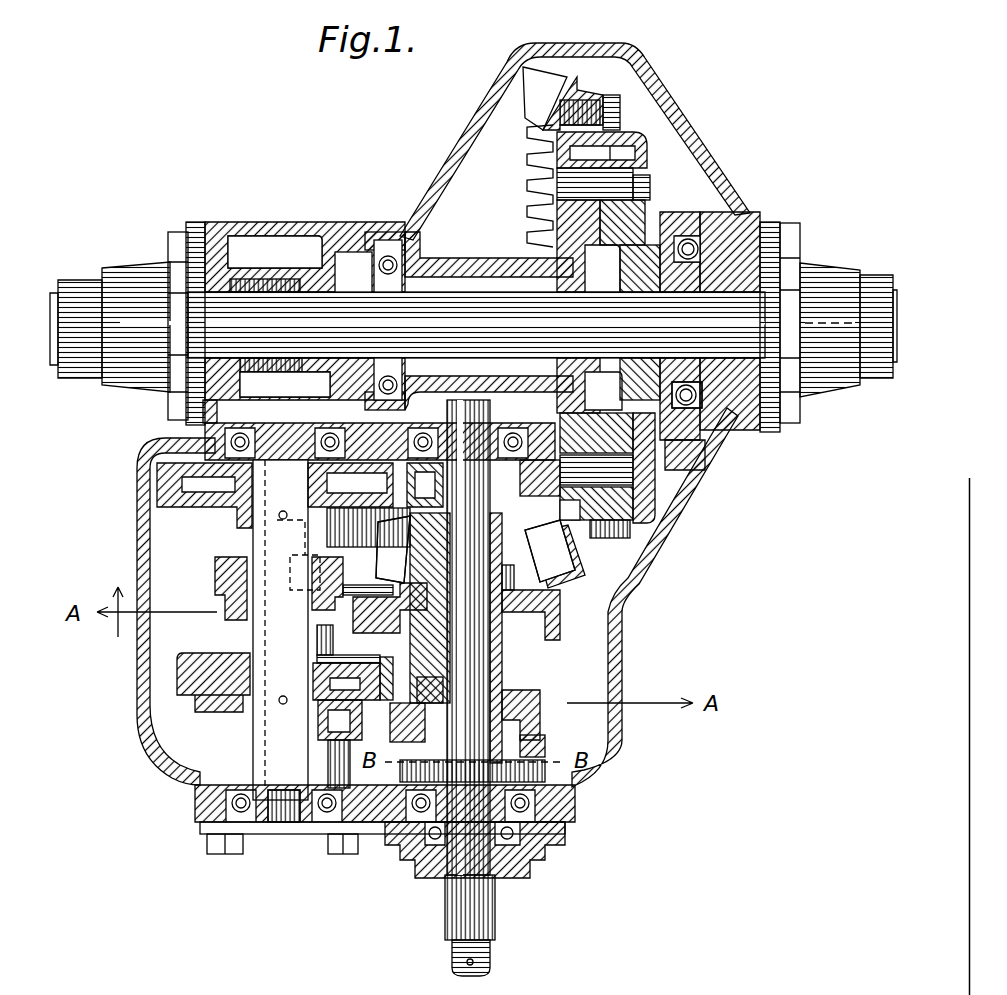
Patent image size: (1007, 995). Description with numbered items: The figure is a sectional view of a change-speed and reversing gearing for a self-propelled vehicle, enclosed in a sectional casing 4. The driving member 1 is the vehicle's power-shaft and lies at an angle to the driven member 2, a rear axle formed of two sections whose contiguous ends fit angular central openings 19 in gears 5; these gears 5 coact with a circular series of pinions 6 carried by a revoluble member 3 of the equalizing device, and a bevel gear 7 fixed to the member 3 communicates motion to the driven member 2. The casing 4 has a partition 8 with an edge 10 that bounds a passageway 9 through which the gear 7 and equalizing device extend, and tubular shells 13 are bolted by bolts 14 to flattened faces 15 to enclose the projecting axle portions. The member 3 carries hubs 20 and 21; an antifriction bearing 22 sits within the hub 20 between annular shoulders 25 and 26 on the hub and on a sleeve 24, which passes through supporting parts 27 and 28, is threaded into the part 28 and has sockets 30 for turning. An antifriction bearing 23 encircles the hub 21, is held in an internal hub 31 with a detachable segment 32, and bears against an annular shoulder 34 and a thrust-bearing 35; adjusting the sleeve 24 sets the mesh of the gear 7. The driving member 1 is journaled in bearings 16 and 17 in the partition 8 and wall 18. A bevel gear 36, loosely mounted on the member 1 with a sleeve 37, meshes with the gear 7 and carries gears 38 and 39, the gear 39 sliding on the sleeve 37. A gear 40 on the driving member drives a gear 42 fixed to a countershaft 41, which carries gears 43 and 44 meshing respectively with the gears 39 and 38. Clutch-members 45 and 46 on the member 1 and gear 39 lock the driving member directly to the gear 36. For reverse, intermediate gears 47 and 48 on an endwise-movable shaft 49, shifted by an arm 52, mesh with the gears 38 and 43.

The driving member 1 is at (460, 655).
The driven member 2 is at (430, 300).
The revoluble member 3 is at (626, 148).
The casing 4 is at (656, 106).
The gears 5 is at (570, 233).
The pinions 6 is at (572, 155).
The bevel gear 7 is at (572, 82).
The partition 8 is at (345, 440).
The passageway 9 is at (657, 470).
The edge of the partition 10 is at (542, 464).
The tubular shells 13 is at (132, 277).
The bolts 14 is at (175, 398).
The flattened faces 15 is at (194, 224).
The bearing 16 is at (500, 440).
The bearing 17 is at (394, 840).
The wall 18 is at (570, 803).
The central openings 19 is at (615, 298).
The hub 20 is at (466, 274).
The hub 21 is at (652, 296).
The antifriction bearing 22 is at (375, 243).
The antifriction bearing 23 is at (730, 216).
The sleeve 24 is at (318, 266).
The annular shoulder 25 is at (352, 264).
The annular shoulder 26 is at (386, 252).
The supporting part 27 is at (322, 238).
The supporting part 28 is at (238, 258).
The sockets 30 is at (285, 386).
The internal hub 31 is at (700, 200).
The detachable segment 32 is at (660, 425).
The annular shoulder 34 is at (668, 213).
The thrust-bearing 35 is at (736, 402).
The bevel gear 36 is at (548, 576).
The sleeve 37 is at (502, 658).
The gear 38 is at (560, 680).
The gear 39 is at (545, 705).
The gear 40 is at (545, 507).
The countershaft 41 is at (268, 553).
The gear 42 is at (197, 500).
The gear 43 is at (222, 579).
The gear 44 is at (205, 665).
The clutch-member 45 is at (527, 772).
The clutch-member 46 is at (537, 749).
The intermediate gear 47 is at (320, 594).
The intermediate gear 48 is at (306, 551).
The shaft 49 is at (335, 750).
The arm 52 is at (378, 697).